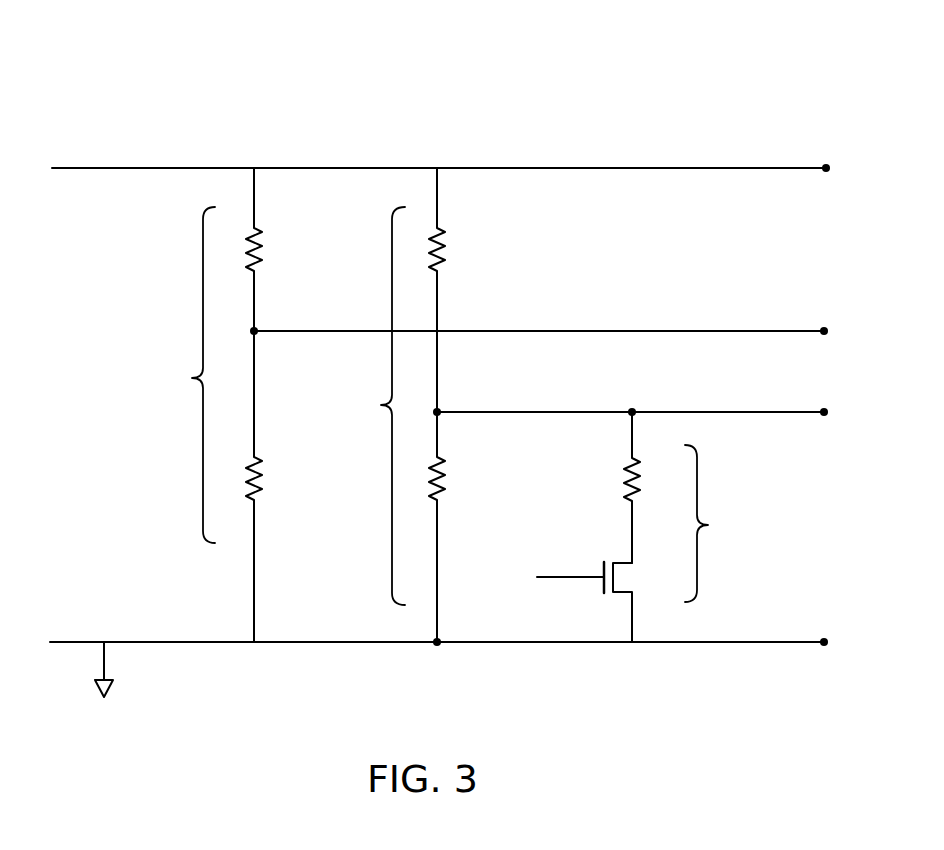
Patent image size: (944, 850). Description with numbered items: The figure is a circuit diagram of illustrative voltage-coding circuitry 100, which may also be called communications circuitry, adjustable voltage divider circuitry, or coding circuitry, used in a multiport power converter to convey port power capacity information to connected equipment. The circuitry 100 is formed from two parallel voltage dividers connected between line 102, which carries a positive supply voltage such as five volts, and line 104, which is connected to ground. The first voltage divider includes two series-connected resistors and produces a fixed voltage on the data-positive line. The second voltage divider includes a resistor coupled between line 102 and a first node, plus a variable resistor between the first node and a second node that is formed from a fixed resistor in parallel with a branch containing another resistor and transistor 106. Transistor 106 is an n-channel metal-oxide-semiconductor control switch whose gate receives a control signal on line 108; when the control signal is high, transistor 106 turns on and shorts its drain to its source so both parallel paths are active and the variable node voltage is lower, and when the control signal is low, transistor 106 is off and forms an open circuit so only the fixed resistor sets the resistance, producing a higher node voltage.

The voltage-coding circuitry 100 is at (593, 50).
The line 102 is at (101, 169).
The line 104 is at (73, 643).
The transistor 106 is at (600, 594).
The line 108 is at (553, 578).